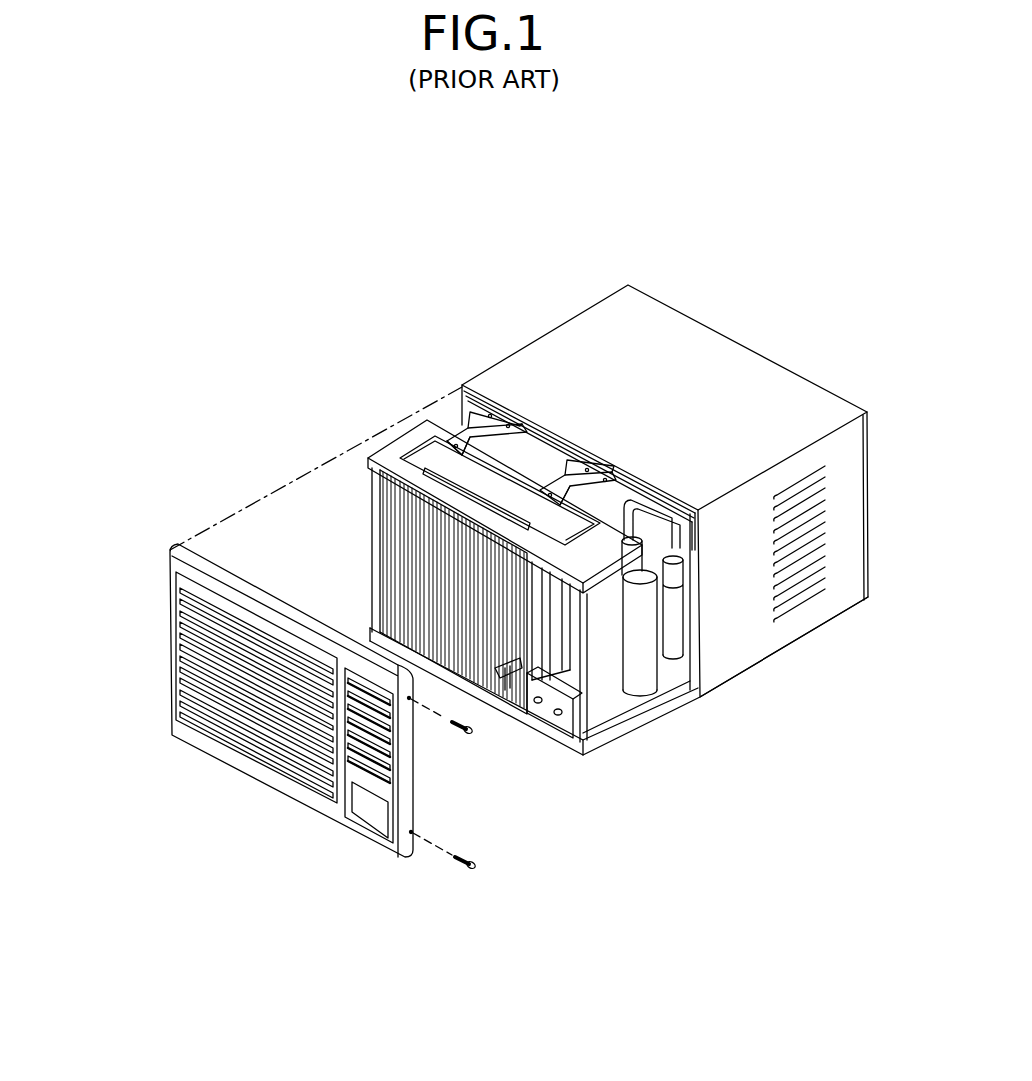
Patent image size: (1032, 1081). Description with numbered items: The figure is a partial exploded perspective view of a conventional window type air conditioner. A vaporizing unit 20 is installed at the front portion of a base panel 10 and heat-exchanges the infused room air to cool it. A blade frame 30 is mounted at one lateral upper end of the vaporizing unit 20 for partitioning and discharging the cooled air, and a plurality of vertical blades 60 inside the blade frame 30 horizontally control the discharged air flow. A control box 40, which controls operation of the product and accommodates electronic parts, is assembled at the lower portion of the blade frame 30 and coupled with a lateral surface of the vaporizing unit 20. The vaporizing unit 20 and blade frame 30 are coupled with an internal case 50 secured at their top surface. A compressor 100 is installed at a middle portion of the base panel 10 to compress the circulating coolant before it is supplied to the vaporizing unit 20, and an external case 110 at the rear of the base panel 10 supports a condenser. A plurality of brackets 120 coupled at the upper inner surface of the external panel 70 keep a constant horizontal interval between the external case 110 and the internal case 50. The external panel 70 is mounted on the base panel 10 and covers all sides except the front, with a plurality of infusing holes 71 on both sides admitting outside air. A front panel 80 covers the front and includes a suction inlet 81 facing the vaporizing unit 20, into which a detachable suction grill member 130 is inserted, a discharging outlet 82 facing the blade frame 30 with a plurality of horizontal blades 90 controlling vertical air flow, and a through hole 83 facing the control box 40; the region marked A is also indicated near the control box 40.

The base panel 10 is at (610, 744).
The vaporizing unit 20 is at (408, 580).
The blade frame 30 is at (593, 677).
The control box 40 is at (548, 710).
The internal case 50 is at (407, 443).
The vertical blades 60 is at (550, 603).
The external panel 70 is at (695, 491).
The infusing holes 71 is at (803, 540).
The front panel 80 is at (259, 716).
The suction inlet 81 is at (189, 696).
The discharging outlet 82 is at (363, 793).
The through hole 83 is at (380, 815).
The horizontal blades 90 is at (371, 776).
The compressor 100 is at (632, 668).
The external case 110 is at (535, 443).
The brackets 120 is at (462, 412).
The suction grill member 130 is at (213, 727).
The fastening portion A is at (500, 693).